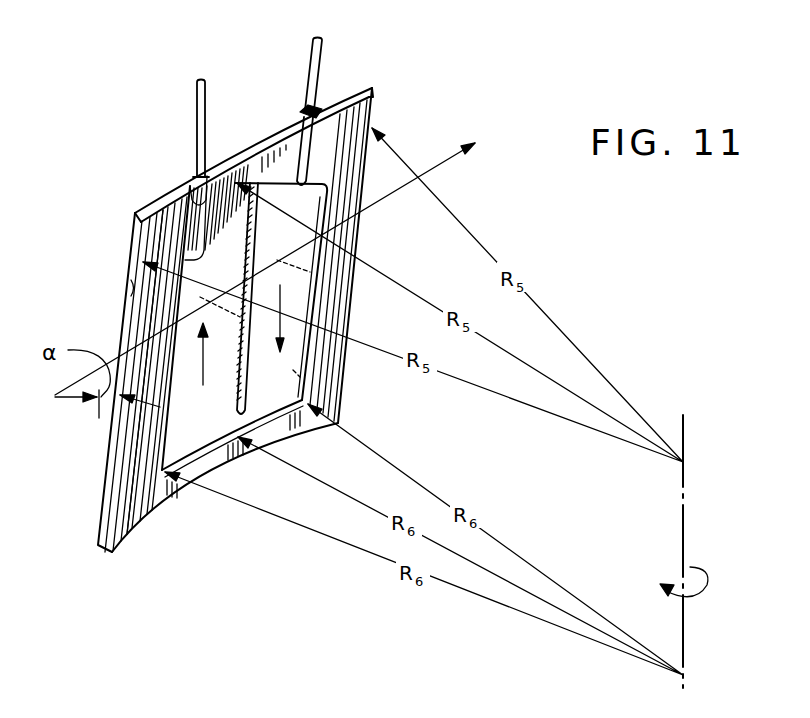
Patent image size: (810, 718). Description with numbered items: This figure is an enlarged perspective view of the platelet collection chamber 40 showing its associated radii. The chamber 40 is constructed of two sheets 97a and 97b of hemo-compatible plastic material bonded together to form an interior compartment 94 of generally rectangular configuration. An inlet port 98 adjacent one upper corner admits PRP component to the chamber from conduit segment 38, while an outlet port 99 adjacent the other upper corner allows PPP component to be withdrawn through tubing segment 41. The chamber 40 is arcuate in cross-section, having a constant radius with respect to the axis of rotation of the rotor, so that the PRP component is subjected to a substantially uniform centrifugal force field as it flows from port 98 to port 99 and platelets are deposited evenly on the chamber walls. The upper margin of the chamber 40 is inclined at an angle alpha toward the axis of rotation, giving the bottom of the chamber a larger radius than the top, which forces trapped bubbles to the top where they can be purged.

The conduit segment 38 is at (313, 58).
The platelet collection chamber 40 is at (145, 415).
The tubing segment 41 is at (205, 100).
The interior compartment 94 is at (218, 412).
The sheet 97a is at (140, 263).
The sheet 97b is at (133, 305).
The inlet port 98 is at (313, 142).
The outlet port 99 is at (197, 205).